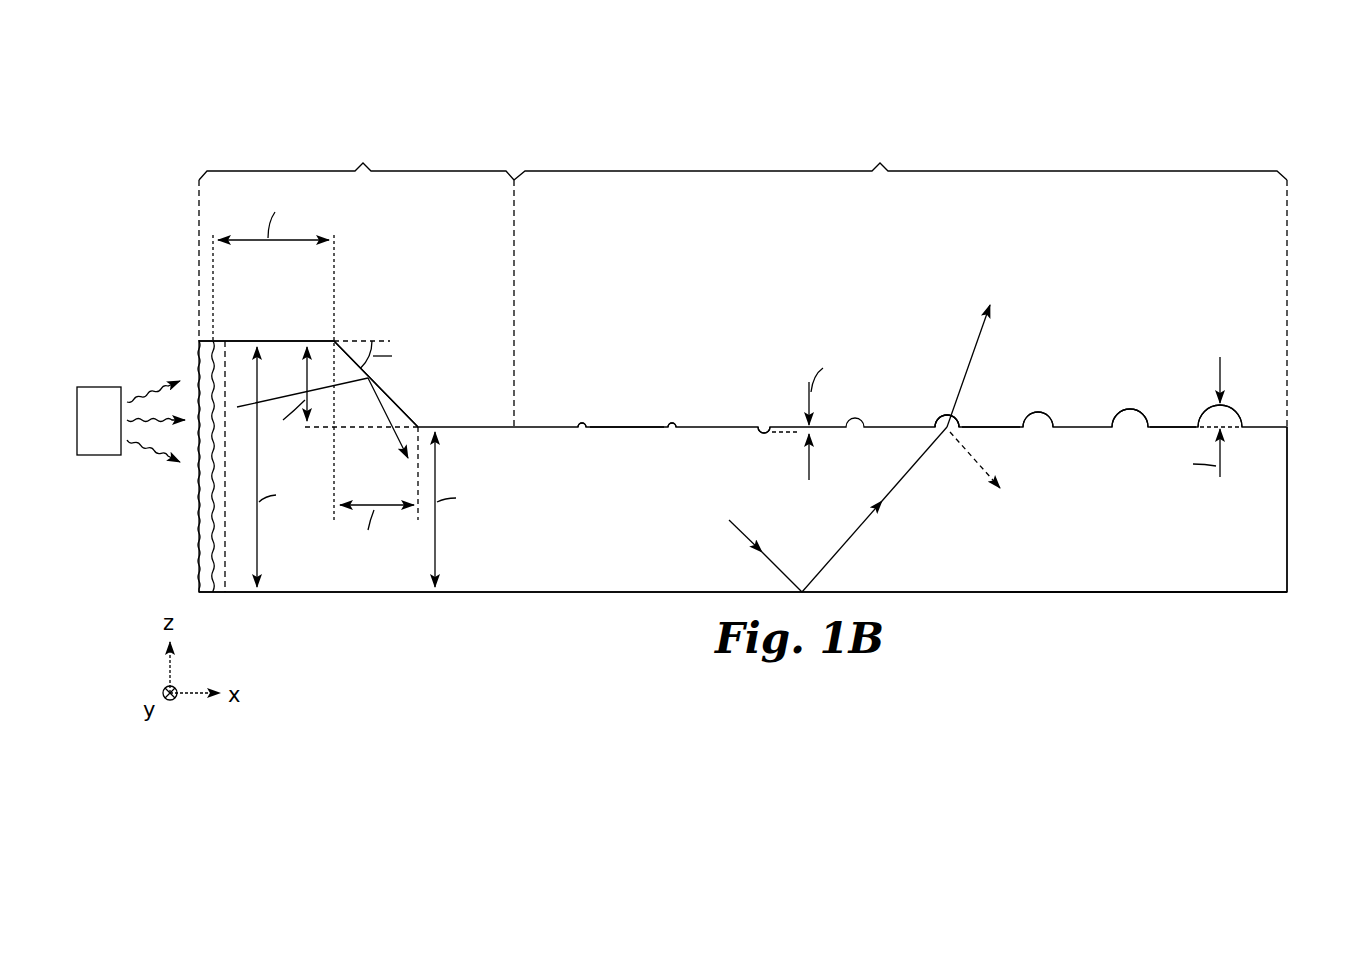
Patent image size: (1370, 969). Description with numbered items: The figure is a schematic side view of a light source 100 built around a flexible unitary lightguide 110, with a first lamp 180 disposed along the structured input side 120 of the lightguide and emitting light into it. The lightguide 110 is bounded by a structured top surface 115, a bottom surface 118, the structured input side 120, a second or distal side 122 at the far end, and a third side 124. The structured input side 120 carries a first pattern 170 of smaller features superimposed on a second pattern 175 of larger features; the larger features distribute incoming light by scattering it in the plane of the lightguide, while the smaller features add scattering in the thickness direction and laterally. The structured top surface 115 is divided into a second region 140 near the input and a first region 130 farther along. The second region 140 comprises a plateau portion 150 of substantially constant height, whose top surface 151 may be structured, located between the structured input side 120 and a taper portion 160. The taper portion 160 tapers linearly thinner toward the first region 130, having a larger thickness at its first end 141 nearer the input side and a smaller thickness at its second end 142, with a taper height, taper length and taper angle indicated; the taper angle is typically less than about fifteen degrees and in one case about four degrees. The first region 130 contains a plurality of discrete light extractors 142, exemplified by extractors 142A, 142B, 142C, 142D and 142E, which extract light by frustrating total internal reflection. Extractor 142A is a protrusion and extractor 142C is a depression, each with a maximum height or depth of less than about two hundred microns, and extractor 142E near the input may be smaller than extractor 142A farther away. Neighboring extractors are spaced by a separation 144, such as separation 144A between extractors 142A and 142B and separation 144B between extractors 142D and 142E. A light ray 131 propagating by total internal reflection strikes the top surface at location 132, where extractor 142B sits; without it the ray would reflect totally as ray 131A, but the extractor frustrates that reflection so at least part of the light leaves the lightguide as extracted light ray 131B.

The light source 100 is at (1174, 125).
The flexible unitary lightguide 110 is at (1289, 475).
The structured top surface 115 is at (1262, 424).
The bottom surface 118 is at (1152, 595).
The structured input side 120 is at (200, 356).
The second or distal side 122 is at (1288, 569).
The third side 124 is at (548, 572).
The first region 130 is at (900, 282).
The light ray 131 is at (850, 537).
The totally internally reflected light ray 131A is at (995, 470).
The extracted light ray 131B is at (975, 330).
The location 132 is at (944, 436).
The second region 140 is at (356, 282).
The first end 141 is at (336, 340).
The discrete light extractors 142 is at (420, 428).
The protruding light extractor 142A is at (1046, 414).
The light extractor 142B is at (938, 420).
The depressed light extractor 142C is at (762, 430).
The light extractor 142D is at (673, 424).
The light extractor 142E is at (583, 424).
The separation 144 is at (1176, 427).
The separation 144A is at (991, 427).
The separation 144B is at (621, 427).
The plateau portion 150 is at (237, 341).
The top surface of the plateau portion 151 is at (290, 341).
The taper portion 160 is at (400, 409).
The first pattern 170 is at (213, 563).
The second pattern 175 is at (199, 516).
The first lamp 180 is at (98, 394).